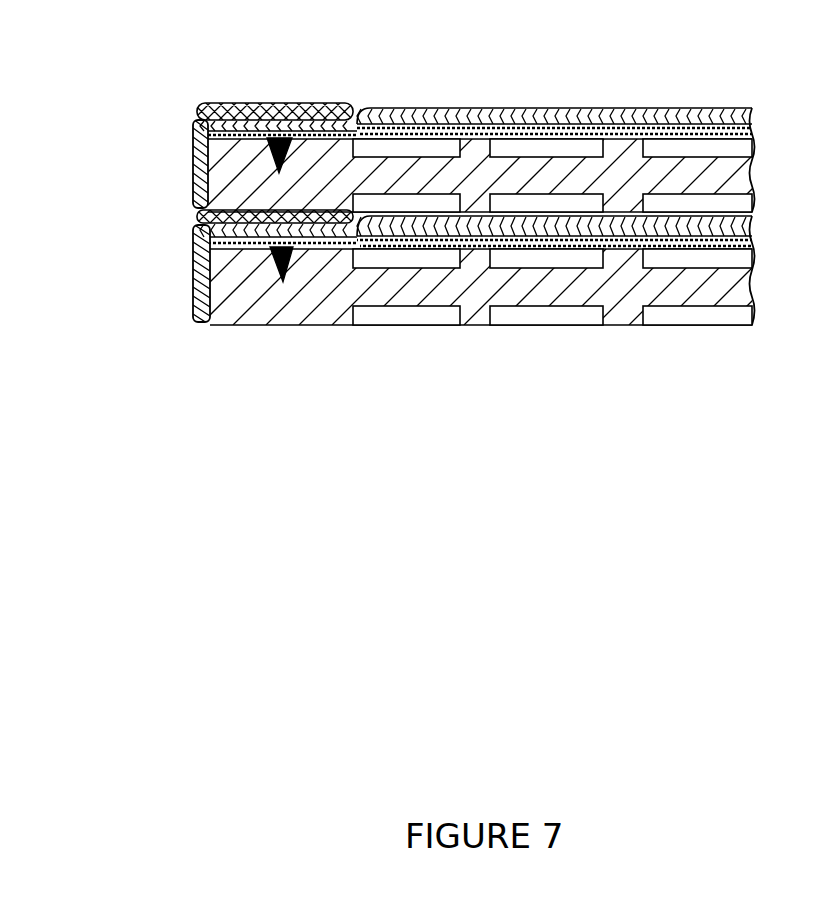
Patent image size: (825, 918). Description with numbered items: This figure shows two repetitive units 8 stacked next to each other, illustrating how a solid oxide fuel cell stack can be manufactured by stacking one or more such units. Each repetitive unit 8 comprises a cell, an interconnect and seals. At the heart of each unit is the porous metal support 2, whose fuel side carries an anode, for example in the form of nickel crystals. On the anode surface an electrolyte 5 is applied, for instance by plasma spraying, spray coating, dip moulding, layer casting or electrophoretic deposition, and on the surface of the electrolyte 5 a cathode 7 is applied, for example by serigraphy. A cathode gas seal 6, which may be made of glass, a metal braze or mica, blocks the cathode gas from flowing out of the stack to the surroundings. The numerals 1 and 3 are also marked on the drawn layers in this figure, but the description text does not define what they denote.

The composite panel 1 is at (197, 233).
The porous metal support 2 is at (343, 215).
The core layer 3 is at (238, 136).
The electrolyte 5 is at (387, 232).
The cathode gas seal 6 is at (212, 107).
The cathode 7 is at (540, 242).
The repetitive unit 8 is at (167, 140).